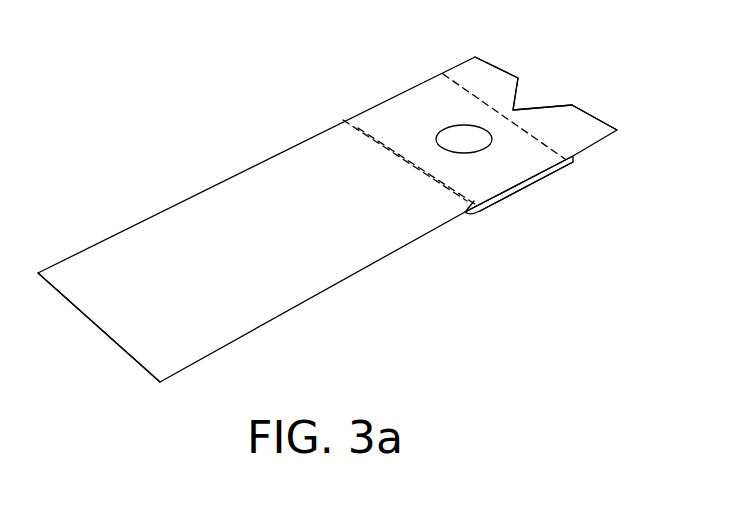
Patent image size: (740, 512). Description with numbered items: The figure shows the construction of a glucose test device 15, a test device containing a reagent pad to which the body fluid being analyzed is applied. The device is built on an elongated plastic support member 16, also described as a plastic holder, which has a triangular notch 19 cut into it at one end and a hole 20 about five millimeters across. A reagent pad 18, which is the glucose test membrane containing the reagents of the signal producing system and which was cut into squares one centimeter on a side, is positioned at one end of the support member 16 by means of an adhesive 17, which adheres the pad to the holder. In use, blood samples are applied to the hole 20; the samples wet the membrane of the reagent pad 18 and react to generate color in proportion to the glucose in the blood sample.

The glucose test device 15 is at (81, 229).
The plastic support member 16 is at (107, 335).
The adhesive 17 is at (509, 189).
The reagent pad 18 is at (558, 170).
The notch 19 is at (518, 83).
The hole 20 is at (453, 131).